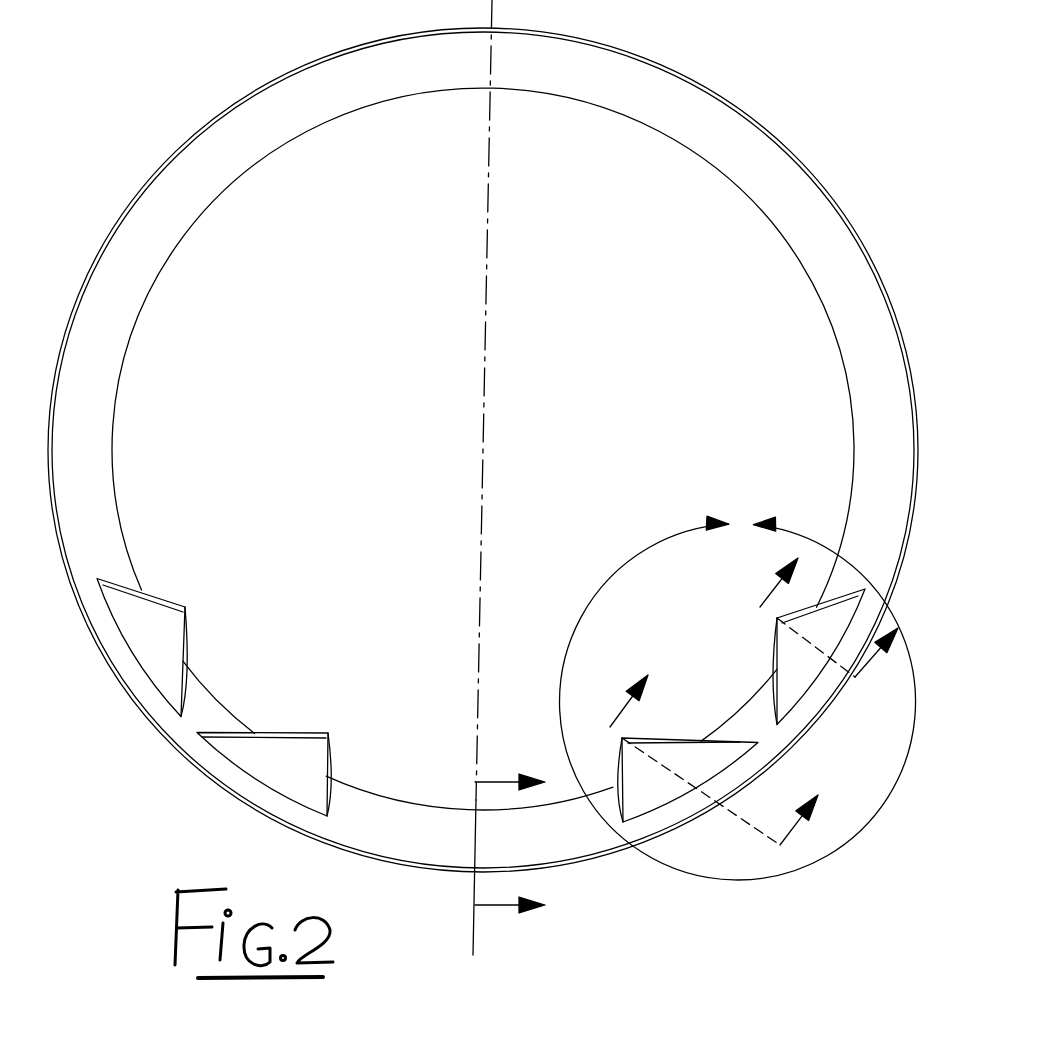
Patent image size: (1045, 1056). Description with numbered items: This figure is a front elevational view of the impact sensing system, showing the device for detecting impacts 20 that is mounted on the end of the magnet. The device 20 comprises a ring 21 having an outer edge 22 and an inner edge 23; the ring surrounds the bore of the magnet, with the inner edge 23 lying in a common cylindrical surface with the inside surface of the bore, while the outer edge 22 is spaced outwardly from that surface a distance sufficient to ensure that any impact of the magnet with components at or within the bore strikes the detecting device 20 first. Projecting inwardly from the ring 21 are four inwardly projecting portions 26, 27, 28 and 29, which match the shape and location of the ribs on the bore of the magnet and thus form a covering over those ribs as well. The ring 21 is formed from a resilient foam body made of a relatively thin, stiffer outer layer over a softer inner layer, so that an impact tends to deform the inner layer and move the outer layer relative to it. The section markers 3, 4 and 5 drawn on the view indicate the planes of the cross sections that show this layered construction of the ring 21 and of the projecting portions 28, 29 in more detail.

The device for detecting impacts 20 is at (195, 150).
The ring 21 is at (243, 147).
The outer edge 22 is at (279, 70).
The inner edge 23 is at (317, 132).
The inwardly projecting portion 26 is at (298, 753).
The inwardly projecting portion 27 is at (168, 620).
The inwardly projecting portion 28 is at (675, 753).
The inwardly projecting portion 29 is at (783, 637).
The section line 3- 3 is at (494, 843).
The section line 4- 4 is at (700, 776).
The section line 5- 5 is at (812, 641).